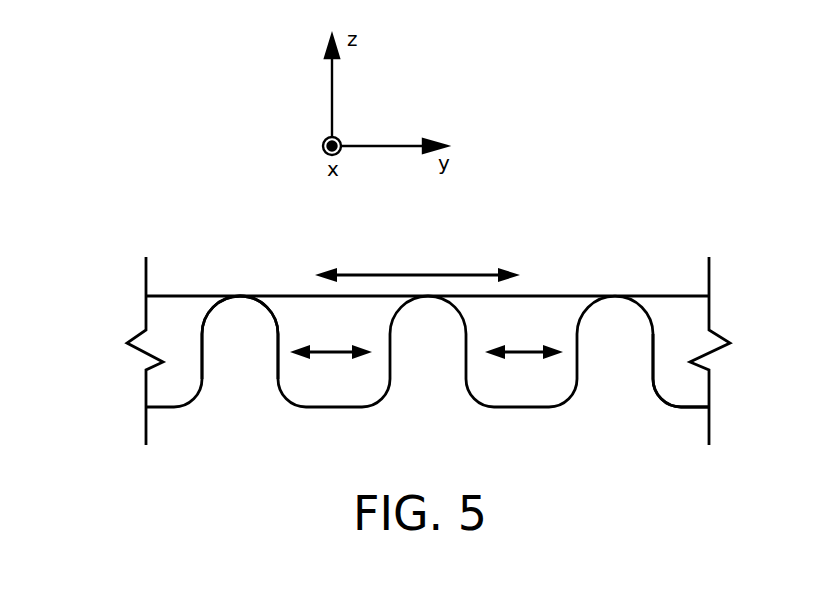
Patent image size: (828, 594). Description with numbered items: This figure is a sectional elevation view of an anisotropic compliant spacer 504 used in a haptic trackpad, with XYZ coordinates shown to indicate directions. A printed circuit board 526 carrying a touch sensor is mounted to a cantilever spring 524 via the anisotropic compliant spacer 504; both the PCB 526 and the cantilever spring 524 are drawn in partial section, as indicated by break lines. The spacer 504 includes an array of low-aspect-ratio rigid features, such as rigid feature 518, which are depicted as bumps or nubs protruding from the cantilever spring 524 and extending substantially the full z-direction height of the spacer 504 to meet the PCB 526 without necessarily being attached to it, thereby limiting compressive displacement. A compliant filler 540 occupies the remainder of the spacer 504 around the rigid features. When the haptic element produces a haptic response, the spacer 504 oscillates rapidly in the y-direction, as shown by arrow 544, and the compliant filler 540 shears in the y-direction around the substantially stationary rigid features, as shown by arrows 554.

The anisotropic compliant spacer 504 is at (106, 235).
The rigid feature 518 is at (260, 372).
The cantilever spring 524 is at (547, 438).
The printed circuit board (PCB) 526 is at (683, 290).
The compliant filler 540 is at (695, 330).
The arrow 544 is at (433, 275).
The arrows 554 is at (330, 352).